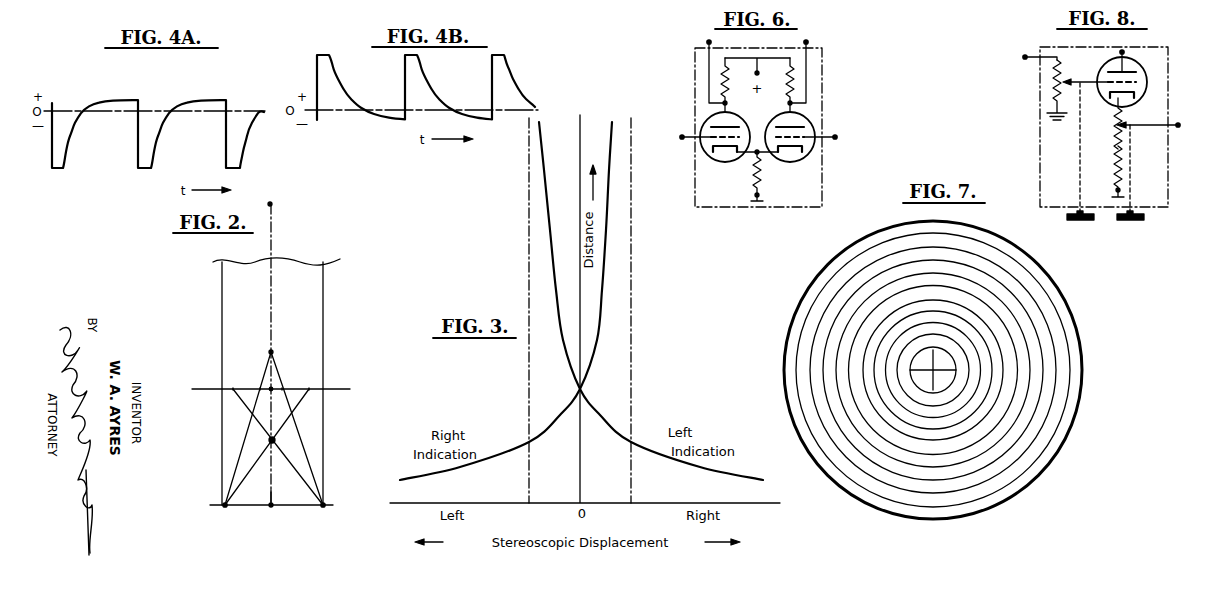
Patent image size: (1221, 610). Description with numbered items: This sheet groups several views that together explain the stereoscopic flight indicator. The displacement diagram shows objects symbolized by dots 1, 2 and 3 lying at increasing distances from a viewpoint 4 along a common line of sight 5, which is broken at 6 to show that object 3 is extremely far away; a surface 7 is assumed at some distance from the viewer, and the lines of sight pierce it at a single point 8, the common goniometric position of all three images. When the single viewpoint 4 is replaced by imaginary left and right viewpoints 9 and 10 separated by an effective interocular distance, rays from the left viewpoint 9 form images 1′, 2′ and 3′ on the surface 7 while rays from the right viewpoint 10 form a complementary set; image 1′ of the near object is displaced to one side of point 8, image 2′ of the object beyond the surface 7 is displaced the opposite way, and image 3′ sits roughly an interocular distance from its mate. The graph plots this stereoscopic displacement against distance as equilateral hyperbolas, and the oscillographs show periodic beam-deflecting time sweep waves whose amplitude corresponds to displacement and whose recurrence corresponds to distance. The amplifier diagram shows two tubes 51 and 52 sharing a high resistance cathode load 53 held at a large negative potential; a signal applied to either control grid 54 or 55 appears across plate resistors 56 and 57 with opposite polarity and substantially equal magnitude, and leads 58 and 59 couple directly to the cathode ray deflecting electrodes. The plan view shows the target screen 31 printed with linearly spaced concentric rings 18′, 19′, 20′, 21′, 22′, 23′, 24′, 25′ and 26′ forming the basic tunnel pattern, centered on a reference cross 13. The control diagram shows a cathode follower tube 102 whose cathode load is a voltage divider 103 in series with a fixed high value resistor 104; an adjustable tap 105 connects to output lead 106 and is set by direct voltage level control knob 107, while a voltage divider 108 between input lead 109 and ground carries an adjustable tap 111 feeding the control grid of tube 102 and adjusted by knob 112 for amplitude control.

In FIG. 2, the object 1 is at (275, 440).
In FIG. 2, the object 2 is at (273, 352).
In FIG. 2, the object 3 is at (272, 205).
In FIG. 2, the viewpoint 4 is at (271, 507).
In FIG. 2, the line of sight 5 is at (275, 493).
In FIG. 2, the break in line of sight 6 is at (228, 262).
In FIG. 2, the surface 7 is at (340, 390).
In FIG. 2, the goniometric position point 8 is at (270, 391).
In FIG. 2, the left viewpoint 9 is at (225, 507).
In FIG. 2, the right viewpoint 10 is at (323, 507).
In FIG. 2, the image 1′ is at (309, 387).
In FIG. 2, the image 2′ is at (259, 387).
In FIG. 2, the image 3′ is at (219, 387).
In FIG. 7, the reference cross 13 is at (934, 389).
In FIG. 7, the printed ring 18′ is at (926, 500).
In FIG. 7, the printed ring 19′ is at (926, 487).
In FIG. 7, the printed ring 20′ is at (926, 475).
In FIG. 7, the printed ring 21′ is at (926, 462).
In FIG. 7, the printed ring 22′ is at (926, 450).
In FIG. 7, the printed ring 23′ is at (926, 437).
In FIG. 7, the printed ring 24′ is at (926, 425).
In FIG. 7, the printed ring 25′ is at (926, 413).
In FIG. 7, the printed ring 26′ is at (926, 400).
In FIG. 7, the target screen 31 is at (1080, 322).
In FIG. 6, the tube 51 is at (702, 120).
In FIG. 6, the tube 52 is at (812, 119).
In FIG. 6, the cathode load 53 is at (762, 178).
In FIG. 6, the control grid 54 is at (712, 142).
In FIG. 6, the control grid 55 is at (803, 142).
In FIG. 6, the plate resistor 56 is at (730, 88).
In FIG. 6, the plate resistor 57 is at (784, 88).
In FIG. 6, the lead 58 is at (707, 41).
In FIG. 6, the lead 59 is at (808, 41).
In FIG. 8, the tube 102 is at (1130, 105).
In FIG. 8, the voltage divider 103 is at (1108, 132).
In FIG. 8, the fixed high value resistor 104 is at (1125, 180).
In FIG. 8, the adjustable tap 105 is at (1132, 128).
In FIG. 8, the output lead 106 is at (1176, 129).
In FIG. 8, the direct voltage level control knob 107 is at (1131, 222).
In FIG. 8, the voltage divider 108 is at (1050, 90).
In FIG. 8, the input lead 109 is at (1022, 59).
In FIG. 8, the adjustable tap 111 is at (1069, 77).
In FIG. 8, the knob 112 is at (1080, 222).